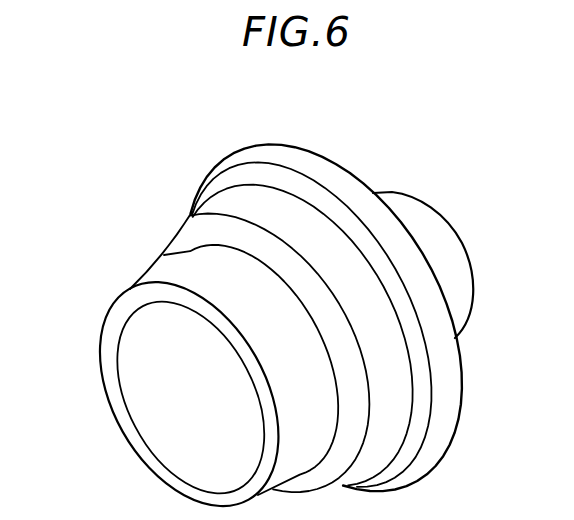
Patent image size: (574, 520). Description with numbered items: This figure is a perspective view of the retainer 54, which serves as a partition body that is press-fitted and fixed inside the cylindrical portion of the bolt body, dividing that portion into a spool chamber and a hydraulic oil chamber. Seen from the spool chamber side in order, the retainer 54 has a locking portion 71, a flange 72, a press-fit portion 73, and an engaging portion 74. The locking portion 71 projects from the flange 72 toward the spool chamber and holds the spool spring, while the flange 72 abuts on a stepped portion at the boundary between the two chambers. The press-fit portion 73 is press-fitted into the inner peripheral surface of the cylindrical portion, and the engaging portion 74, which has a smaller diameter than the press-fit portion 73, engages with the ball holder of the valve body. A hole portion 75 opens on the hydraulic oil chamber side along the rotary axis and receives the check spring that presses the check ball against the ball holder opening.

The retainer 54 is at (400, 152).
The locking portion 71 is at (460, 255).
The flange 72 is at (285, 159).
The press-fit portion 73 is at (227, 207).
The engaging portion 74 is at (193, 271).
The hole portion 75 is at (161, 397).